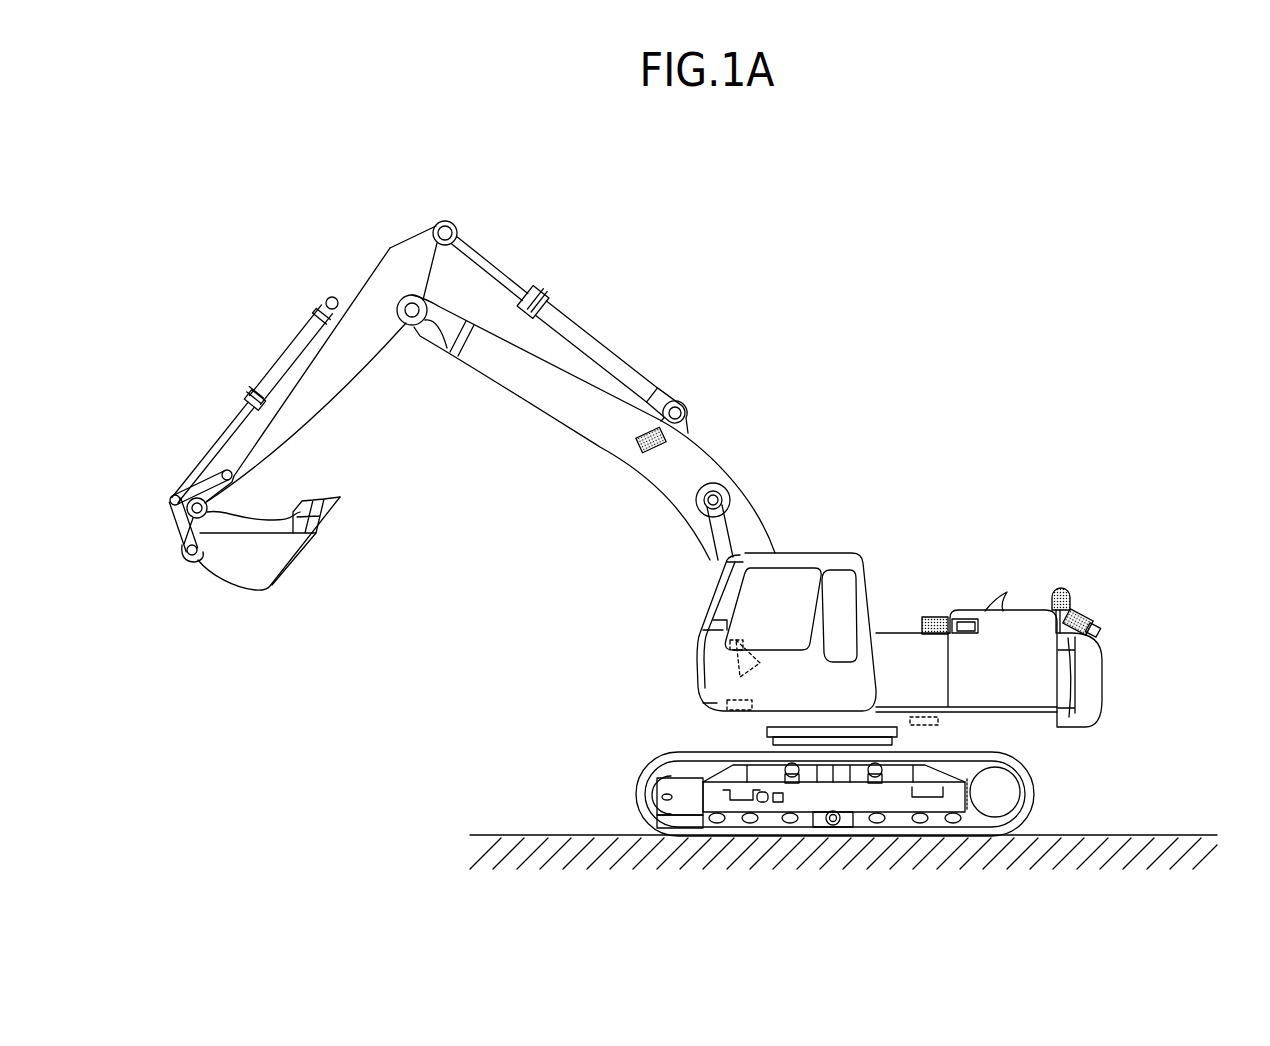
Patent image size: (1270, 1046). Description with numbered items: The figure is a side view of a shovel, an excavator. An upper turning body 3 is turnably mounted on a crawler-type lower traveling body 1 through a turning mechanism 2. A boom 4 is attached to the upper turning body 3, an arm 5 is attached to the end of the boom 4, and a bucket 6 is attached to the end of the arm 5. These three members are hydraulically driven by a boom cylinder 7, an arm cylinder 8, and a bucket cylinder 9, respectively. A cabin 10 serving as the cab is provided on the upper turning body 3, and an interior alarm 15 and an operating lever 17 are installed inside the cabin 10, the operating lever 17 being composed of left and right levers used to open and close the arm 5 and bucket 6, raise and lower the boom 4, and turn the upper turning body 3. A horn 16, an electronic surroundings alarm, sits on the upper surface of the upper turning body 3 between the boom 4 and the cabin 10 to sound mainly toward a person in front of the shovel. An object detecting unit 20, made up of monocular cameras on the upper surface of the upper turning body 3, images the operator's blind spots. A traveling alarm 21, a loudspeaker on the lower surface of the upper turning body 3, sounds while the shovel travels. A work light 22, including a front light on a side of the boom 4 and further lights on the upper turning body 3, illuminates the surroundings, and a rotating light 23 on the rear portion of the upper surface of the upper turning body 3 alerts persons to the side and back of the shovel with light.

The lower traveling body 1 is at (635, 802).
The turning mechanism 2 is at (770, 743).
The upper turning body 3 is at (880, 632).
The boom 4 is at (600, 430).
The arm 5 is at (323, 385).
The bucket 6 is at (253, 592).
The boom cylinder 7 is at (720, 523).
The arm cylinder 8 is at (592, 347).
The bucket cylinder 9 is at (287, 360).
The cabin 10 is at (812, 550).
The interior alarm 15 is at (713, 607).
The horn 16 is at (727, 690).
The operating lever 17 is at (735, 667).
The object detecting unit 20 is at (1137, 608).
The traveling alarm 21 is at (938, 718).
The work light 22 is at (667, 445).
The rotating light 23 is at (1057, 587).